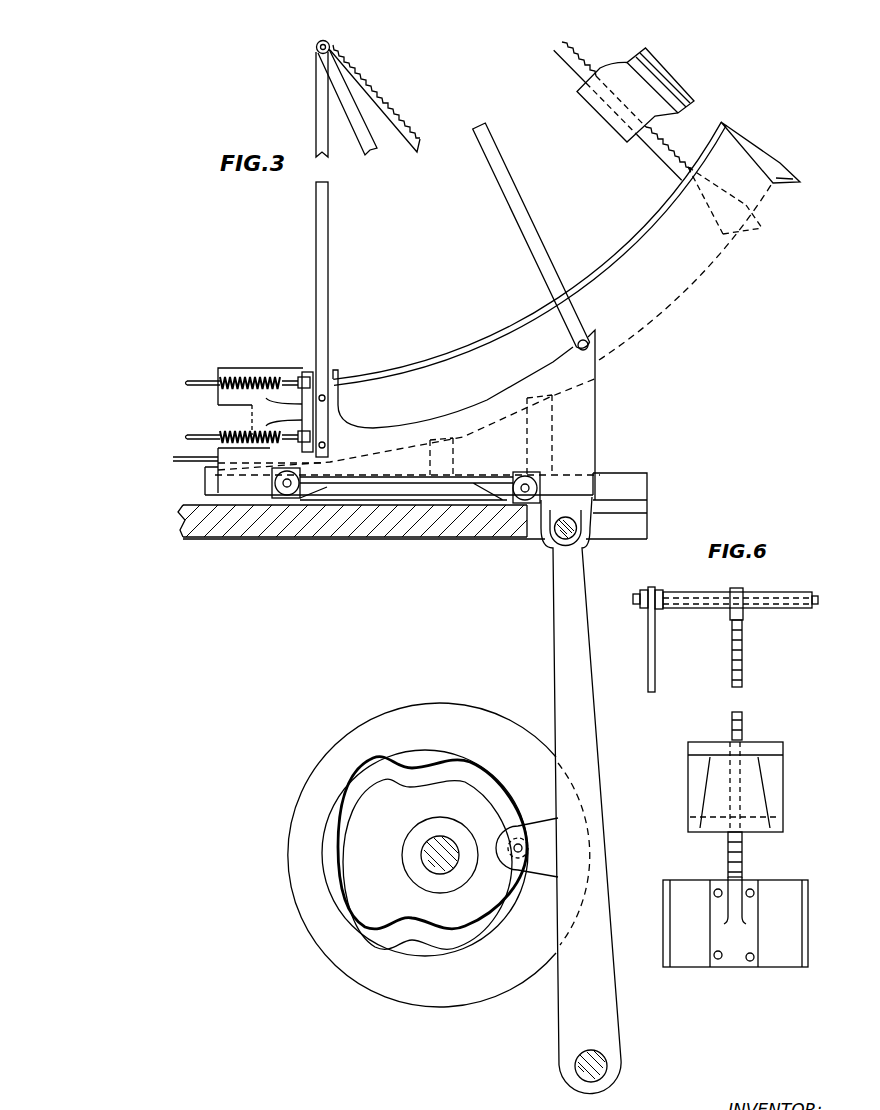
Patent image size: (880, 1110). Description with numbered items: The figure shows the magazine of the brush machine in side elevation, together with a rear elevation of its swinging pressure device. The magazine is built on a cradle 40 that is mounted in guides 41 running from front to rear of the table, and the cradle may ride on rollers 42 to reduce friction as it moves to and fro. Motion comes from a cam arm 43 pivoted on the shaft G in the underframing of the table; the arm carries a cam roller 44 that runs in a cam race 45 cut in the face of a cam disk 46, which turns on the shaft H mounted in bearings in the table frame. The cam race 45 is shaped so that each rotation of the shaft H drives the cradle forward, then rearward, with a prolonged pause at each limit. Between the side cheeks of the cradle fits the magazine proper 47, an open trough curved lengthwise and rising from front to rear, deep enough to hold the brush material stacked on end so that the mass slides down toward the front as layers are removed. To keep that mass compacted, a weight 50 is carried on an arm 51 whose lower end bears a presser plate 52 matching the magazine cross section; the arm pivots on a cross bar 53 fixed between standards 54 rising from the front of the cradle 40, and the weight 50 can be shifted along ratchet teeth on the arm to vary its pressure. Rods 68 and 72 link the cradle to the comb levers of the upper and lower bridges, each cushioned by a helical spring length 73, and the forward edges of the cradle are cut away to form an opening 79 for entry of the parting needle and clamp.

In FIG. 3, the cradle 40 is at (287, 373).
In FIG. 3, the guides 41 is at (637, 485).
In FIG. 3, the rollers 42 is at (533, 473).
In FIG. 3, the cam arm 43 is at (581, 795).
In FIG. 3, the cam roller 44 is at (527, 847).
In FIG. 3, the cam race 45 is at (365, 935).
In FIG. 3, the cam disk 46 is at (422, 855).
In FIG. 3, the magazine proper 47 is at (532, 275).
In FIG. 3, the weight 50 is at (667, 90).
In FIG. 6, the weight 50 is at (735, 787).
In FIG. 3, the arm 51 is at (662, 152).
In FIG. 6, the arm 51 is at (743, 726).
In FIG. 3, the presser plate 52 is at (720, 227).
In FIG. 6, the presser plate 52 is at (735, 923).
In FIG. 3, the cross bar 53 is at (331, 49).
In FIG. 6, the cross bar 53 is at (667, 590).
In FIG. 3, the standards 54 is at (316, 213).
In FIG. 6, the standards 54 is at (656, 678).
In FIG. 3, the rod 68 is at (203, 379).
In FIG. 3, the rod 72 is at (197, 434).
In FIG. 3, the helical spring length 73 is at (258, 380).
In FIG. 3, the opening 79 is at (240, 433).
In FIG. 3, the shaft G is at (605, 1062).
In FIG. 3, the shaft H is at (423, 853).